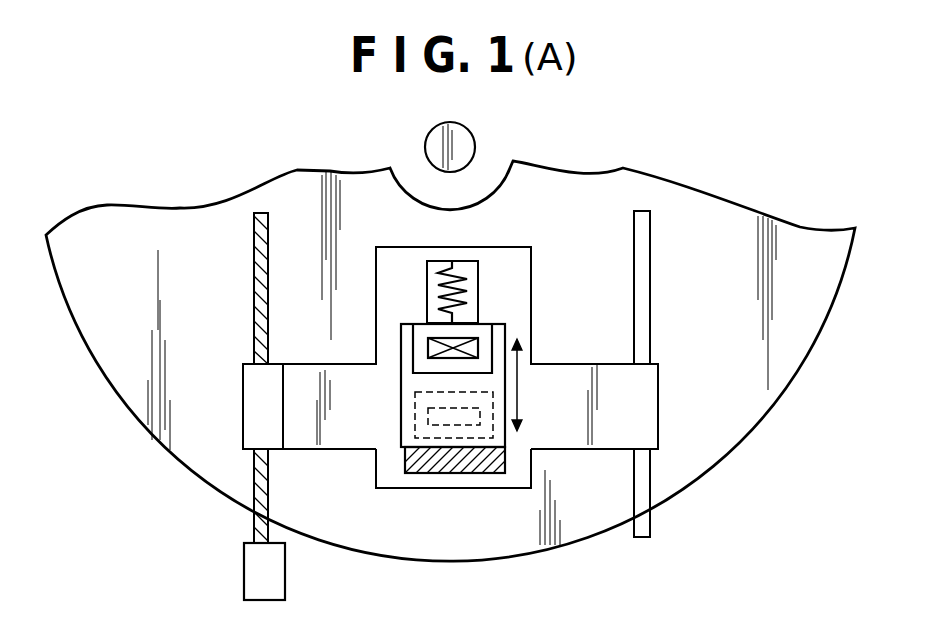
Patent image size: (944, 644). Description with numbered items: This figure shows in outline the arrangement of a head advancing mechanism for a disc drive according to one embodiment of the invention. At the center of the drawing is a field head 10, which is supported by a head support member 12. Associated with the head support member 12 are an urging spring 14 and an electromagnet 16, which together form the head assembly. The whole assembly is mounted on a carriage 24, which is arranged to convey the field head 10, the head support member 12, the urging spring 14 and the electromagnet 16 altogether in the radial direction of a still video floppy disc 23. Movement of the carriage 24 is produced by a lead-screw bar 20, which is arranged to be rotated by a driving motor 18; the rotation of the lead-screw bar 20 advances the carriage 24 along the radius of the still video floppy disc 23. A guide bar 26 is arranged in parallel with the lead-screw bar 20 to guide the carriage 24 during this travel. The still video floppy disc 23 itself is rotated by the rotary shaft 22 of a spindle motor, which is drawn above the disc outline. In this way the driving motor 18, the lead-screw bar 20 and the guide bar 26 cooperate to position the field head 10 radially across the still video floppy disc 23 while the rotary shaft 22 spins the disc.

The field head 10 is at (462, 340).
The head support member 12 is at (497, 337).
The urging spring 14 is at (440, 302).
The electromagnet 16 is at (436, 469).
The driving motor 18 is at (257, 577).
The lead-screw bar 20 is at (256, 295).
The rotary shaft of a spindle motor 22 is at (424, 146).
The still video floppy disc 23 is at (756, 410).
The carriage 24 is at (630, 412).
The guide bar 26 is at (652, 528).